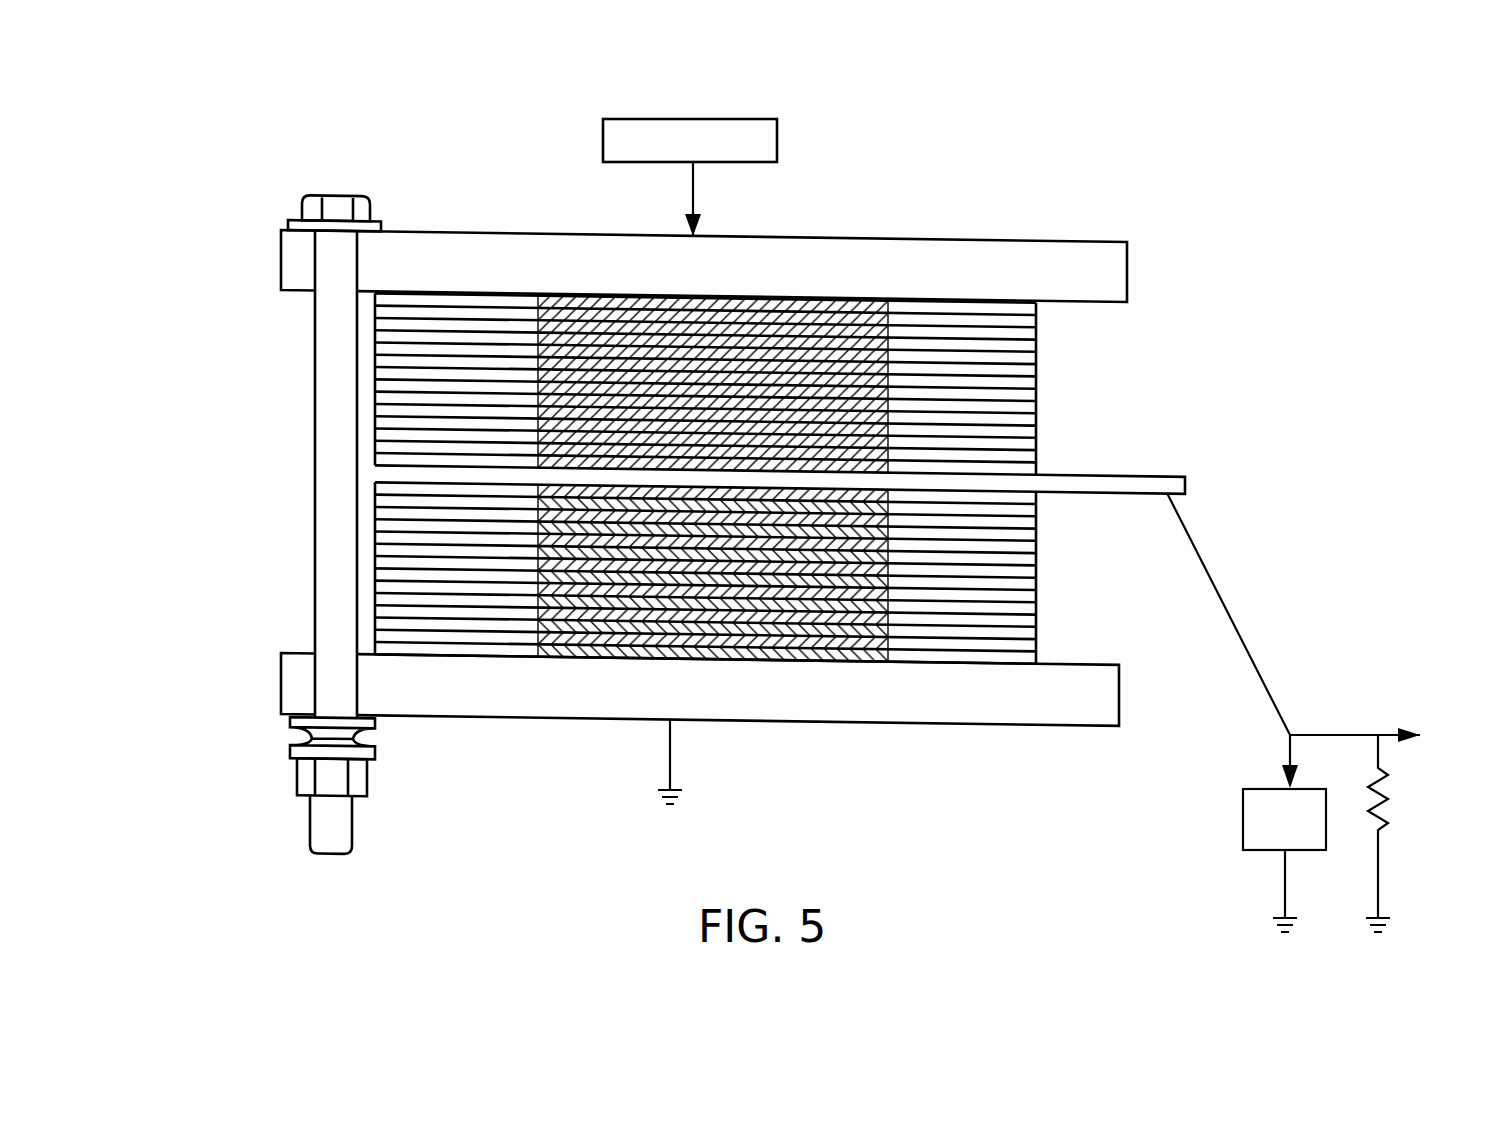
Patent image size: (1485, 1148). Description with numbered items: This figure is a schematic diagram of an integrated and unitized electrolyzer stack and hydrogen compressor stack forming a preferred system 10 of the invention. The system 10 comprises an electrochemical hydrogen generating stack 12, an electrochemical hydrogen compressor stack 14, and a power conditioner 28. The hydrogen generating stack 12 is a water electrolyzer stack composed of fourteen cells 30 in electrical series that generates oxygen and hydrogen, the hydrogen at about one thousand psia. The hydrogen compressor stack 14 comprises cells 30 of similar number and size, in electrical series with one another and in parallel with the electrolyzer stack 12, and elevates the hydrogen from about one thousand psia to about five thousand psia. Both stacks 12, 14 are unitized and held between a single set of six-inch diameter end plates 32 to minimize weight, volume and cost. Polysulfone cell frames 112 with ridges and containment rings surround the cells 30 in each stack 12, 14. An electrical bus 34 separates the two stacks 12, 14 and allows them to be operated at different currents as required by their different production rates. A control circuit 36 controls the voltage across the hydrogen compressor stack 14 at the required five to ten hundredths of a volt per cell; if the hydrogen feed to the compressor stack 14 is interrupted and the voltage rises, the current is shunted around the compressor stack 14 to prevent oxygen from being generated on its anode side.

The system 10 is at (243, 421).
The cell frames 112 is at (419, 317).
The power conditioner 28 is at (778, 138).
The cells 30 is at (840, 300).
The end plates 32 is at (1128, 268).
The electrical bus 34 is at (1187, 483).
The electrochemical hydrogen generating stack 12 is at (1055, 305).
The electrochemical hydrogen compressor stack 14 is at (1055, 498).
The control circuit 36 is at (1330, 712).